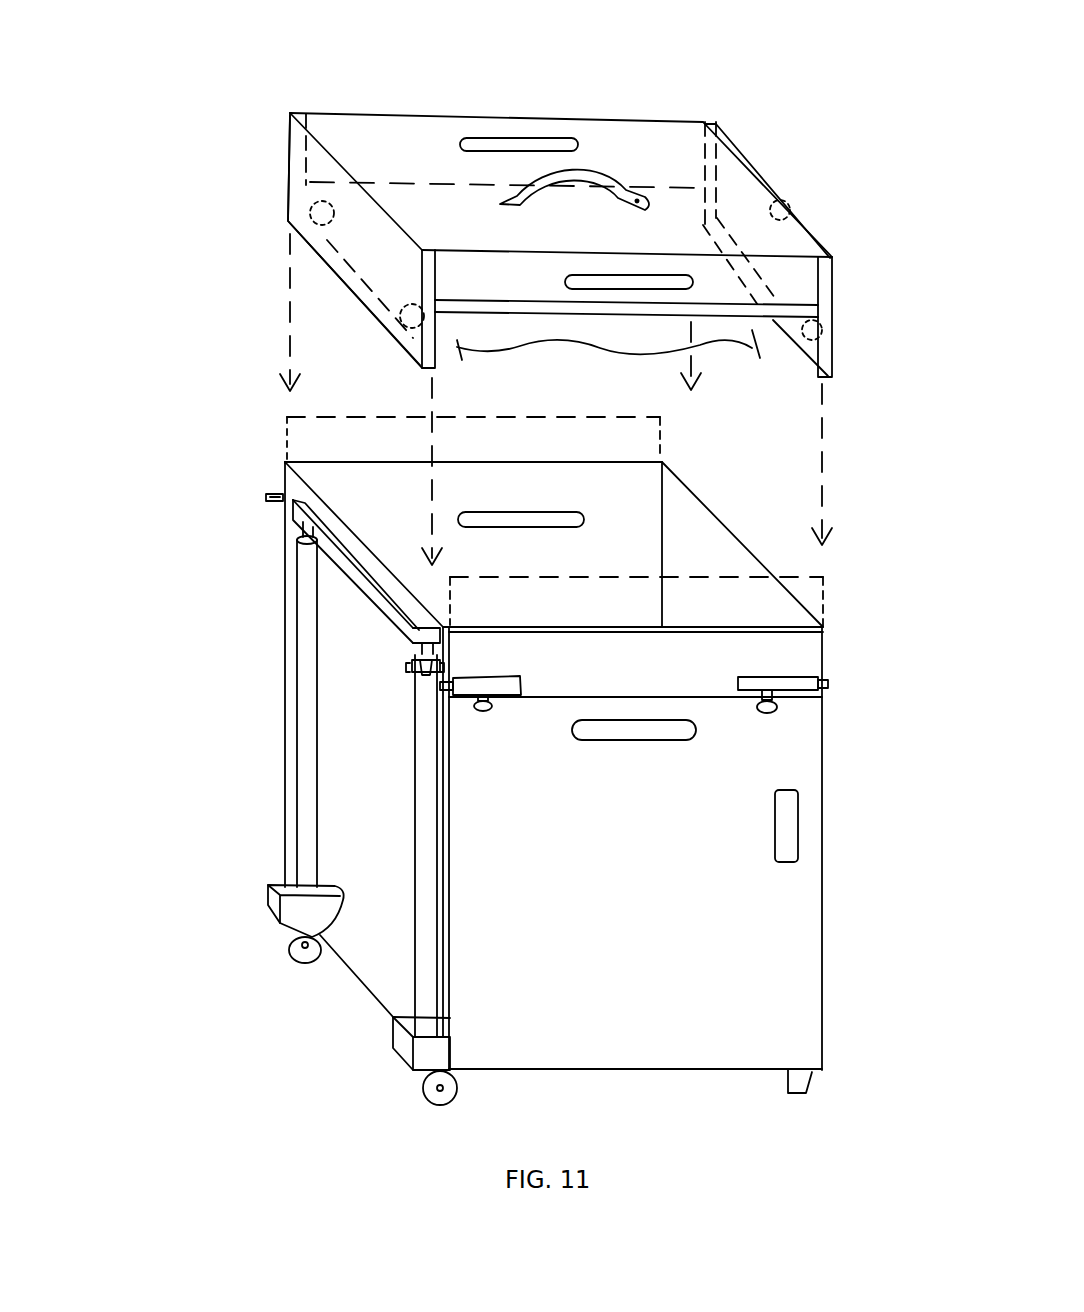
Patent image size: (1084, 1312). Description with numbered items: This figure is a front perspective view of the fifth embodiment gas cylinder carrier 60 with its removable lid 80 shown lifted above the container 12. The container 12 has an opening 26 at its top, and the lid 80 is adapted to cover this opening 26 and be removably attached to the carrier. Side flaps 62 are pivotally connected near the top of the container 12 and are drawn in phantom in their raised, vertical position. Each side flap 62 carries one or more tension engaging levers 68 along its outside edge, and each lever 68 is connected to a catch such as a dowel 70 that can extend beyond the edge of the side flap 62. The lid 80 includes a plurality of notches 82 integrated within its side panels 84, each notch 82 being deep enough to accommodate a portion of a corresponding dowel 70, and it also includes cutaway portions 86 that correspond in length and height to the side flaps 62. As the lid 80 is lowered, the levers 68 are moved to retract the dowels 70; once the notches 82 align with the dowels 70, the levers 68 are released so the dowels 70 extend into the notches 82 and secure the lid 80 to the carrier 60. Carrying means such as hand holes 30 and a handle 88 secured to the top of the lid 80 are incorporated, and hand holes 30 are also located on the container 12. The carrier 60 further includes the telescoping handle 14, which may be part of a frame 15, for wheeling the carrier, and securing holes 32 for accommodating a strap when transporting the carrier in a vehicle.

The lid 80 is at (383, 111).
The handle 88 is at (612, 168).
The notches 82 is at (318, 203).
The side panels 84 is at (367, 247).
The hand holes 30 is at (563, 281).
The cutaway portions 86 is at (596, 358).
The container 12 is at (822, 983).
The side flaps 62 is at (812, 653).
The opening 26 is at (633, 537).
The securing holes 32 is at (792, 836).
The dowel 70 is at (278, 497).
The tension engaging lever 68 is at (771, 716).
The telescoping handle 14 is at (308, 725).
The frame 15 is at (392, 1052).
The fifth embodiment gas cylinder carrier 60 is at (229, 1010).